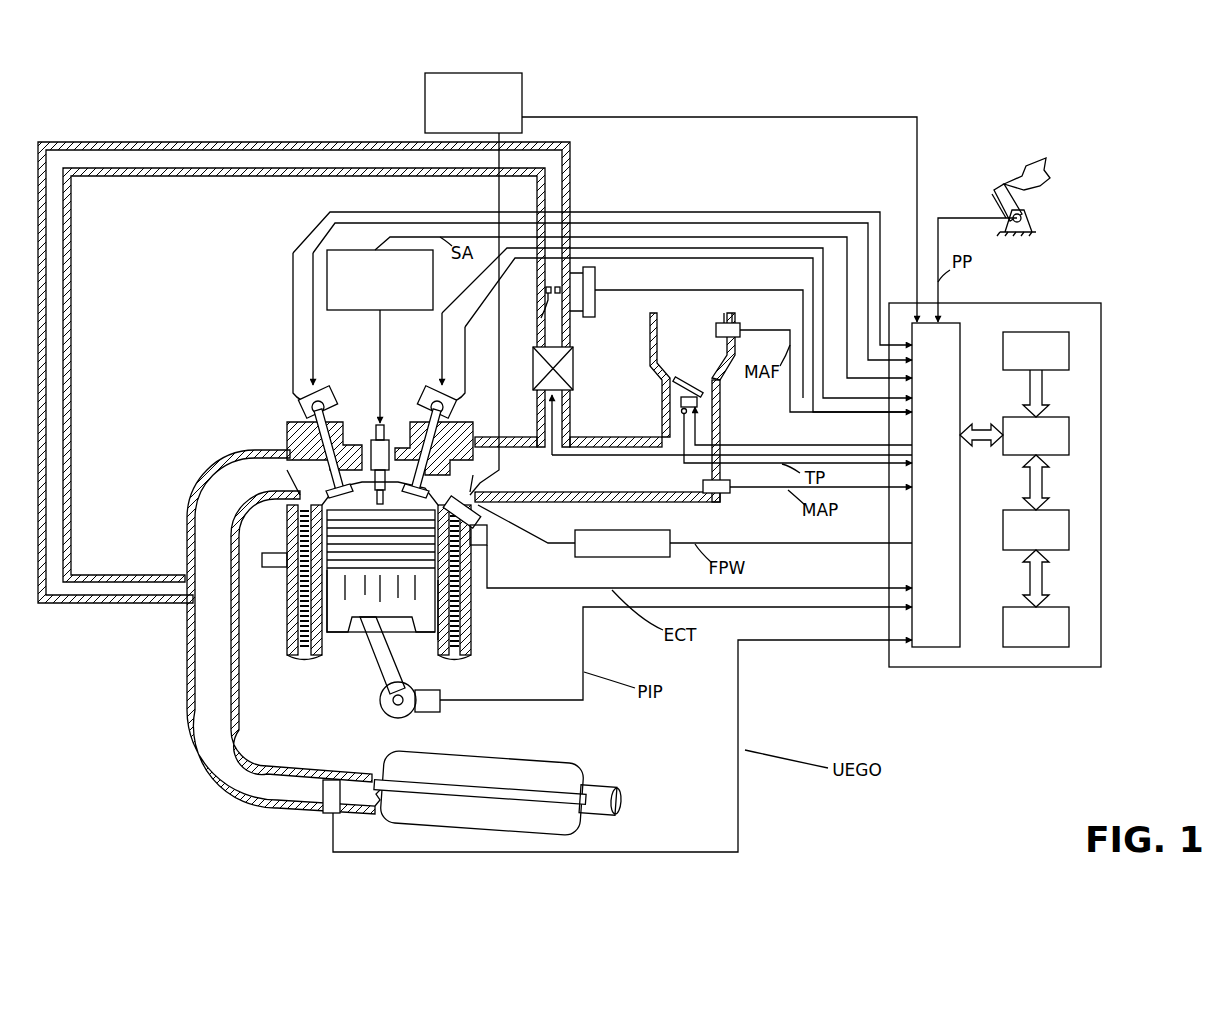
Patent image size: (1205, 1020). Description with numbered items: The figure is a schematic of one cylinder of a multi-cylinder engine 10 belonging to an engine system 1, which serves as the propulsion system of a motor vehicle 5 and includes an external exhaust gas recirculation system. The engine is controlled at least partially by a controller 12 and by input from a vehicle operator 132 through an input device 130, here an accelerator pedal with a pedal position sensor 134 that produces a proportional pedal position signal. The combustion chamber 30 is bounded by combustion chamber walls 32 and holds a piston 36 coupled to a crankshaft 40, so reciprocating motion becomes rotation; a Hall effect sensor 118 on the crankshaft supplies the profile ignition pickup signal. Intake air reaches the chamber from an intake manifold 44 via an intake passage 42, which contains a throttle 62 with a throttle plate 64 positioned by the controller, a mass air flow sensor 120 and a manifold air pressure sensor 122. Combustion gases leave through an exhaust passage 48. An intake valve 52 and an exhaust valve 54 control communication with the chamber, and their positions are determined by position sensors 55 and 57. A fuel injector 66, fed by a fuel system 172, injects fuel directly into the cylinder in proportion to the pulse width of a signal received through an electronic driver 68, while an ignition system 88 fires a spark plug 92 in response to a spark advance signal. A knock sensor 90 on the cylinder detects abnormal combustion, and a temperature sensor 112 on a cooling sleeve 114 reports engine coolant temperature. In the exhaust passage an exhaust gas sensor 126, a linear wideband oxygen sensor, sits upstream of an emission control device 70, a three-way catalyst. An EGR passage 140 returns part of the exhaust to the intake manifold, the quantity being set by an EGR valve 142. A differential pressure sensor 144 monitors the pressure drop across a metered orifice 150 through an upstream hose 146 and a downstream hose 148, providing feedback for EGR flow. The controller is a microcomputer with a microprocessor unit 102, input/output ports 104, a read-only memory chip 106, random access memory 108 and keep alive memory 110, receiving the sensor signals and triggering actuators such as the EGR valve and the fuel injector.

The engine system 1 is at (933, 722).
The motor vehicle 5 is at (1150, 104).
The engine 10 is at (228, 376).
The controller 12 is at (1027, 473).
The combustion chamber 30 is at (378, 500).
The combustion chamber walls 32 is at (325, 657).
The piston 36 is at (366, 605).
The crankshaft 40 is at (390, 717).
The intake passage 42 is at (688, 347).
The intake manifold 44 is at (605, 407).
The exhaust passage 48 is at (284, 632).
The intake valve 52 is at (428, 472).
The exhaust valve 54 is at (330, 480).
The position sensor 55 is at (454, 408).
The position sensor 57 is at (300, 398).
The throttle 62 is at (706, 386).
The throttle plate 64 is at (663, 380).
The fuel injector 66 is at (500, 522).
The electronic driver 68 is at (585, 558).
The emission control device 70 is at (553, 762).
The ignition system 88 is at (338, 250).
The knock sensor 90 is at (280, 568).
The spark plug 92 is at (384, 422).
The microprocessor unit 102 is at (1070, 432).
The input/output ports 104 is at (962, 330).
The read-only memory chip 106 is at (1070, 345).
The random access memory 108 is at (1070, 530).
The keep alive memory 110 is at (1070, 625).
The temperature sensor 112 is at (490, 546).
The cooling sleeve 114 is at (468, 605).
The Hall effect sensor 118 is at (432, 713).
The mass air flow sensor 120 is at (742, 323).
The manifold air pressure sensor 122 is at (726, 494).
The exhaust gas sensor 126 is at (330, 815).
The input device 130 is at (1000, 196).
The vehicle operator 132 is at (1046, 184).
The pedal position sensor 134 is at (1030, 220).
The EGR passage 140 is at (305, 142).
The EGR valve 142 is at (573, 366).
The differential pressure sensor 144 is at (595, 286).
The upstream hose 146 is at (546, 289).
The downstream hose 148 is at (576, 313).
The orifice 150 is at (546, 305).
The fuel system 172 is at (522, 107).